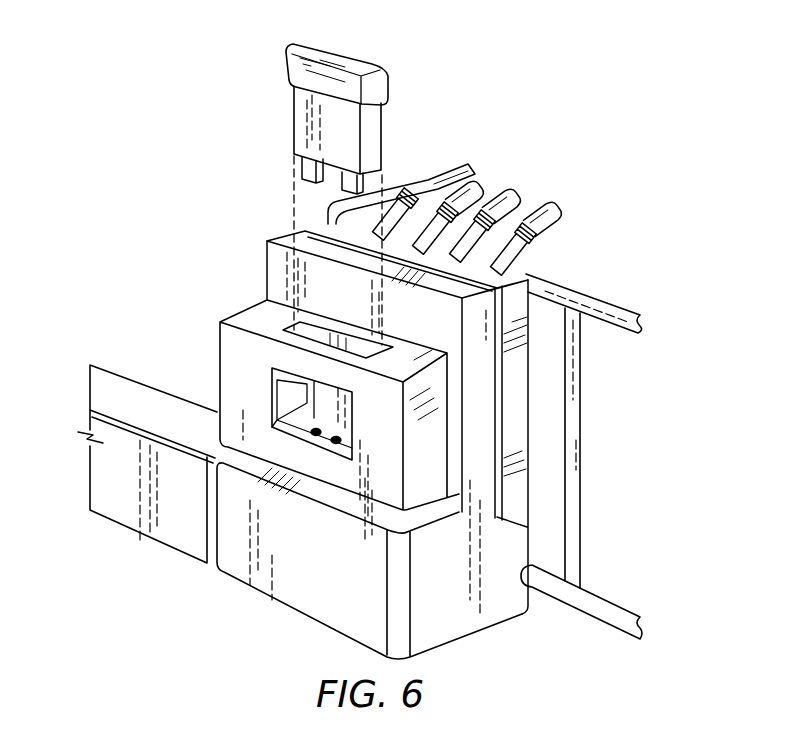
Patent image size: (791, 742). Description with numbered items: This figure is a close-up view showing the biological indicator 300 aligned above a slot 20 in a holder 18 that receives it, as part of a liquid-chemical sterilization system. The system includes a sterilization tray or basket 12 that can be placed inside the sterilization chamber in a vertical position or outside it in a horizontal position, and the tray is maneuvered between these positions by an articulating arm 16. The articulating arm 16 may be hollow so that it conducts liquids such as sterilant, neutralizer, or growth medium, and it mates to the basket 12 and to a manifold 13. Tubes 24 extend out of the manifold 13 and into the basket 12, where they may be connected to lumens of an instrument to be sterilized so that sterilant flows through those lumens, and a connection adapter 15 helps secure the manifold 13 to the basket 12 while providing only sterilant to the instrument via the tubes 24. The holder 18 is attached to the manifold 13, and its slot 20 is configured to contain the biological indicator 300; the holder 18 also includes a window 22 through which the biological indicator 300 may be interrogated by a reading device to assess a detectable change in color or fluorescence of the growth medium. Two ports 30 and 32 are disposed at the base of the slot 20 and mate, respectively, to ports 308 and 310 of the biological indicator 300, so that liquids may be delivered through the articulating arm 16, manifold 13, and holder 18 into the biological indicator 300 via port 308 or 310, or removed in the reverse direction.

The sterilization tray or basket 12 is at (616, 303).
The manifold 13 is at (488, 313).
The connection adapter 15 is at (517, 397).
The articulating arm 16 is at (100, 487).
The holder 18 is at (232, 318).
The slot 20 is at (312, 331).
The window 22 is at (282, 403).
The tubes 24 is at (535, 213).
The port 30 is at (315, 436).
The port 32 is at (334, 444).
The biological indicator 300 is at (357, 52).
The port of biological indicator 308 is at (297, 168).
The port of biological indicator 310 is at (383, 181).